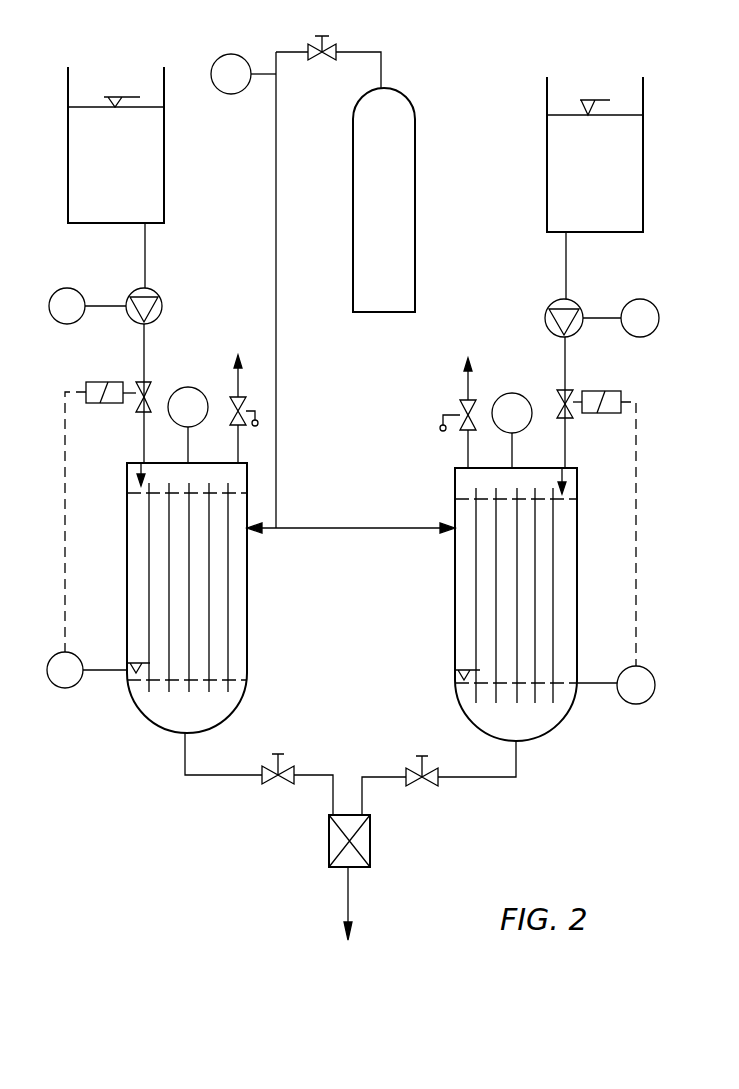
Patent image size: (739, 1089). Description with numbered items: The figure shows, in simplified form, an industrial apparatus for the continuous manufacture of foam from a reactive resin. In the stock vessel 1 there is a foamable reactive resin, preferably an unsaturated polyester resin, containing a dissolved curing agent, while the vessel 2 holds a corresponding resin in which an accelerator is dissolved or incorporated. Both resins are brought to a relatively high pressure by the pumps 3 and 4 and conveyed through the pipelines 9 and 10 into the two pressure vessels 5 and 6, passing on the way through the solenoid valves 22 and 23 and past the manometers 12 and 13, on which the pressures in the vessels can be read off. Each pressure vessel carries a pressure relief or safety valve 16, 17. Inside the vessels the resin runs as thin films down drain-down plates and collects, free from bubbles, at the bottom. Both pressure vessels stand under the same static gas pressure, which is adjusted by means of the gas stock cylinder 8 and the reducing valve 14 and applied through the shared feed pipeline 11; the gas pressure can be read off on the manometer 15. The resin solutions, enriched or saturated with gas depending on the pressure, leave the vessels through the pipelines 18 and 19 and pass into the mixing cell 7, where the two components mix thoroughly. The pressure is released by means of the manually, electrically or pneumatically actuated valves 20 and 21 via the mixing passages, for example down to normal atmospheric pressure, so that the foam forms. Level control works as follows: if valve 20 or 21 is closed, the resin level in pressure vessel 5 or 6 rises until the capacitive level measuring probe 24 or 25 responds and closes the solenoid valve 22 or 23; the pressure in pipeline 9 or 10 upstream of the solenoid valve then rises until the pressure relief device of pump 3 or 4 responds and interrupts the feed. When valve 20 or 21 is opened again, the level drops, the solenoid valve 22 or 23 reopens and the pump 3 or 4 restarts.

The stock vessel 1 is at (141, 125).
The vessel 2 is at (558, 150).
The pump 3 is at (147, 297).
The pump 4 is at (565, 308).
The pressure vessel 5 is at (247, 597).
The pressure vessel 6 is at (455, 598).
The mixing cell 7 is at (345, 842).
The gas stock cylinder 8 is at (389, 120).
The pipeline 9 is at (145, 340).
The pipeline 10 is at (562, 347).
The shared feed pipeline 11 is at (353, 530).
The manometer 12 is at (190, 405).
The manometer 13 is at (515, 418).
The reducing valve 14 is at (310, 48).
The manometer 15 is at (231, 74).
The pressure relief valve 16 is at (241, 400).
The pressure relief valve 17 is at (470, 400).
The outlet 18 is at (185, 755).
The outlet 19 is at (516, 765).
The valve 20 is at (265, 782).
The valve 21 is at (433, 784).
The solenoid valve 22 is at (150, 385).
The solenoid valve 23 is at (562, 390).
The capacitive level measuring probe 24 is at (75, 678).
The capacitive level measuring probe 25 is at (632, 690).